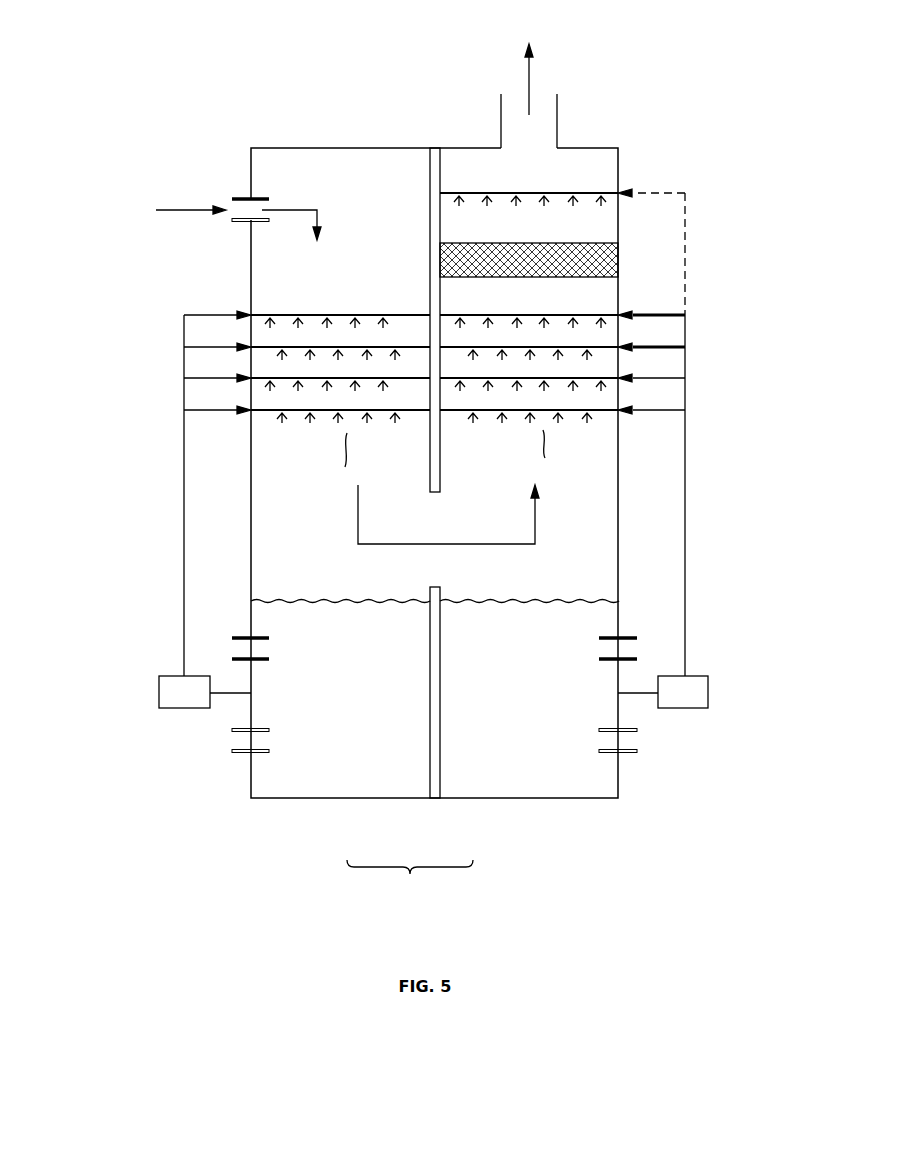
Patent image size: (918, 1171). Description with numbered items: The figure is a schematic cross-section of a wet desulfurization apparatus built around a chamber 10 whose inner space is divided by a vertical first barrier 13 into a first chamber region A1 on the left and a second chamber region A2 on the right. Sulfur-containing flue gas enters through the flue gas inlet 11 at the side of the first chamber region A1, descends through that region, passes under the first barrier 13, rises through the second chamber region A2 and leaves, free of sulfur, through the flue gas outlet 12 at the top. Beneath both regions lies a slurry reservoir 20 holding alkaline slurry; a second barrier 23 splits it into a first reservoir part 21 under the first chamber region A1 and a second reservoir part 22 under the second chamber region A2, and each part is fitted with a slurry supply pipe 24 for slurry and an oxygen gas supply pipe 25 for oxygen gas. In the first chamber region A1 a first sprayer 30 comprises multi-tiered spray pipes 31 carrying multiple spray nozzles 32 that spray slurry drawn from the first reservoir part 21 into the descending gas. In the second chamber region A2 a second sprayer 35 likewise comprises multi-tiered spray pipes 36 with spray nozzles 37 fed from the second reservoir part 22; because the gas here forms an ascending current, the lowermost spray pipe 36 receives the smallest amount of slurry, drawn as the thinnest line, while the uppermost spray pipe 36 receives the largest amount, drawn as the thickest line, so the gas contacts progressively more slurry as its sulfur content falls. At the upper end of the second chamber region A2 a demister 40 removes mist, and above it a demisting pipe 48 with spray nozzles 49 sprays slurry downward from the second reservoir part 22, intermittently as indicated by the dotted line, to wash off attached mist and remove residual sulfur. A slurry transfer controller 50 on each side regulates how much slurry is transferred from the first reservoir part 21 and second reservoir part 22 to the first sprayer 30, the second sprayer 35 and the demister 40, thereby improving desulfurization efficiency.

The chamber 10 is at (618, 163).
The flue gas inlet 11 is at (240, 199).
The flue gas outlet 12 is at (557, 117).
The first barrier 13 is at (429, 172).
The slurry reservoir 20 is at (410, 879).
The first reservoir part 21 is at (368, 782).
The second reservoir part 22 is at (472, 782).
The second barrier 23 is at (433, 772).
The slurry supply pipe 24 is at (245, 635).
The oxygen gas supply pipe 25 is at (245, 753).
The first sprayer 30 is at (155, 280).
The spray pipe 31 is at (280, 313).
The spray nozzle 32 is at (270, 324).
The second sprayer 35 is at (717, 282).
The spray pipe 36 is at (590, 315).
The spray nozzle 37 is at (602, 325).
The demister 40 is at (603, 260).
The demisting pipe 48 is at (587, 193).
The spray nozzle 49 is at (600, 204).
The slurry transfer controller 50 is at (172, 709).
The first chamber region A1 is at (345, 452).
The second chamber region A2 is at (552, 443).